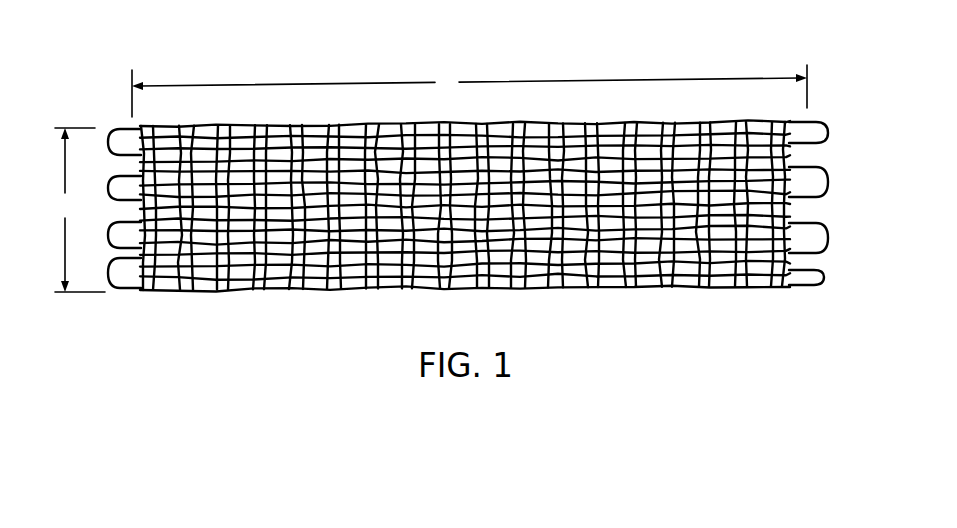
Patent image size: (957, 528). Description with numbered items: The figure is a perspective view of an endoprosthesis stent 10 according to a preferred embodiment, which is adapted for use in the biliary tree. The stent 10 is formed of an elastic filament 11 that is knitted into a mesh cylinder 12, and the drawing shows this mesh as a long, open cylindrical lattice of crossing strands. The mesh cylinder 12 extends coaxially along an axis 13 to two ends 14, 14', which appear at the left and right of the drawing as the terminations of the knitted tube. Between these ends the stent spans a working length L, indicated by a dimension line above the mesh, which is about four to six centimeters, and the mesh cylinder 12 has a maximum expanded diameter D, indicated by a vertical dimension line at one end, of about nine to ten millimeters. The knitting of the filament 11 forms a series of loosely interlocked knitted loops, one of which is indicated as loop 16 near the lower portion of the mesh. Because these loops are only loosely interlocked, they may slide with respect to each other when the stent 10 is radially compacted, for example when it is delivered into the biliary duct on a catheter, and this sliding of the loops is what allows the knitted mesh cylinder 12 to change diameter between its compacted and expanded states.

The endoprosthesis stent 10 is at (530, 41).
The elastic filament 11 is at (717, 120).
The mesh cylinder 12 is at (708, 307).
The axis 13 is at (132, 206).
The end 14 is at (124, 293).
The end 14' is at (826, 284).
The knitted loop 16 is at (262, 288).
The working length L is at (469, 91).
The maximum expanded diameter D is at (80, 210).